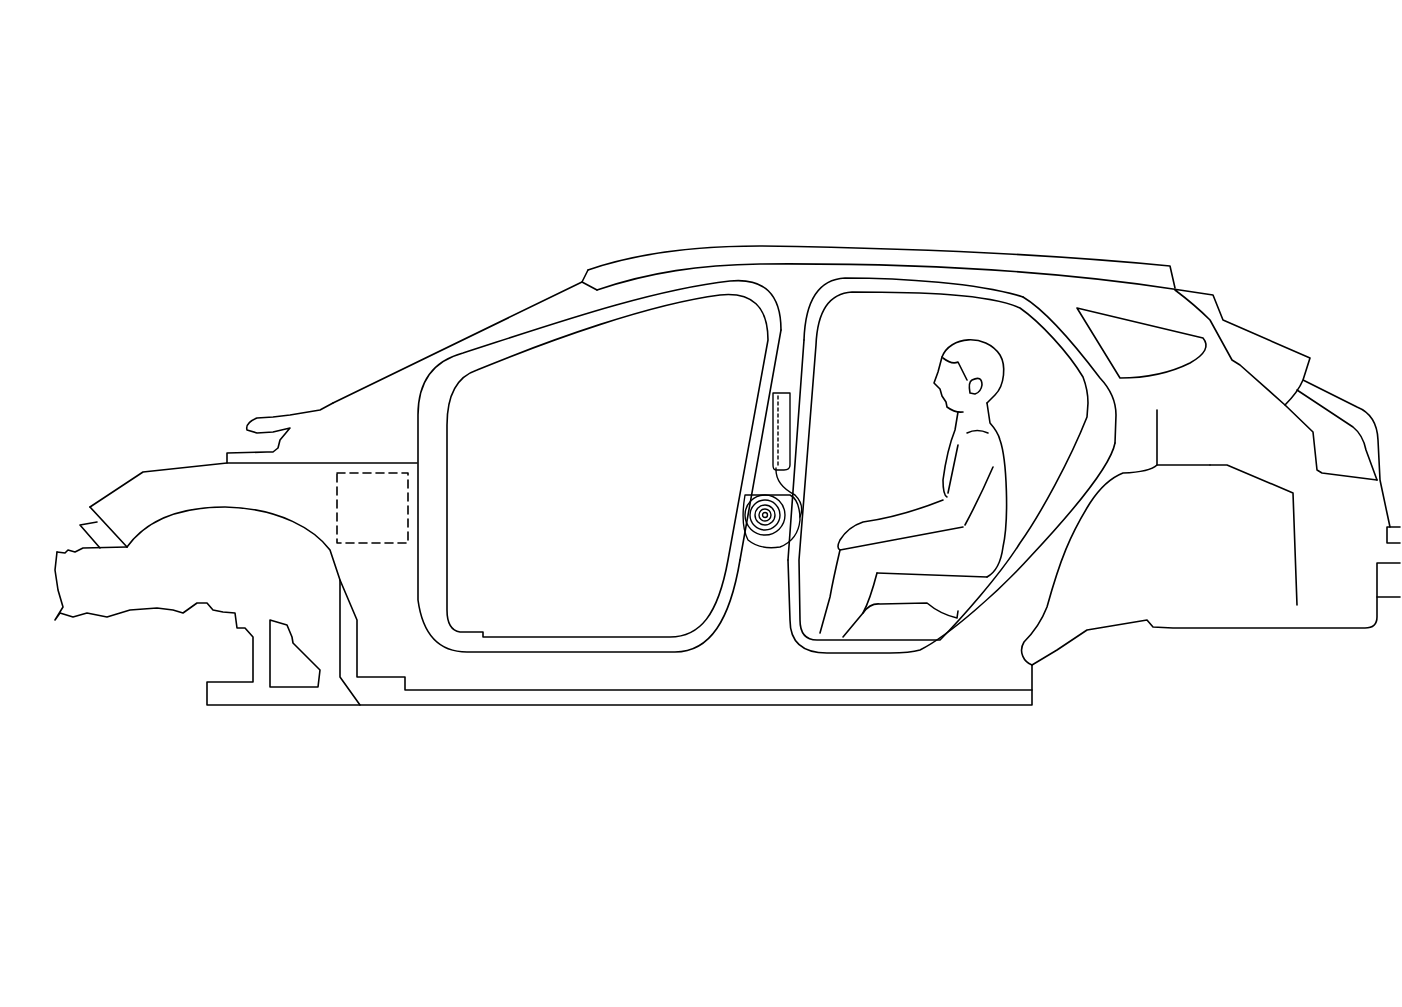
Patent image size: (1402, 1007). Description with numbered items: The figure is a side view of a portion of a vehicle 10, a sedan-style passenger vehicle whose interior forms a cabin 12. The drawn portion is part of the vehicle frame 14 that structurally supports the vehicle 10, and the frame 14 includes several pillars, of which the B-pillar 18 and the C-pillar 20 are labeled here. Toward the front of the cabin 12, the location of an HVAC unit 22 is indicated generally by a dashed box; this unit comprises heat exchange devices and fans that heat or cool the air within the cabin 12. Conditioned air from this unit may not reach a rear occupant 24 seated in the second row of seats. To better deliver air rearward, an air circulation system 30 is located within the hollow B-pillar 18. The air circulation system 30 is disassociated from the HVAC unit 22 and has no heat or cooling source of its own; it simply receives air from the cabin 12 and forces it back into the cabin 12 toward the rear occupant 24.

The vehicle 10 is at (898, 143).
The cabin 12 is at (533, 422).
The vehicle frame 14 is at (1072, 285).
The B-pillar 18 is at (793, 300).
The C-pillar 20 is at (1077, 480).
The HVAC unit 22 is at (372, 465).
The rear occupant 24 is at (984, 330).
The air circulation system 30 is at (762, 565).